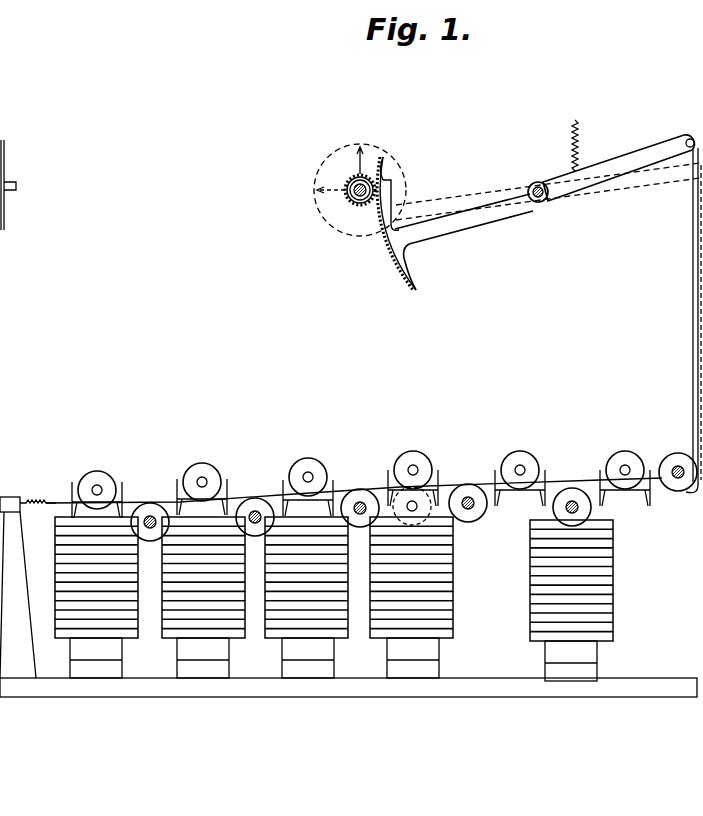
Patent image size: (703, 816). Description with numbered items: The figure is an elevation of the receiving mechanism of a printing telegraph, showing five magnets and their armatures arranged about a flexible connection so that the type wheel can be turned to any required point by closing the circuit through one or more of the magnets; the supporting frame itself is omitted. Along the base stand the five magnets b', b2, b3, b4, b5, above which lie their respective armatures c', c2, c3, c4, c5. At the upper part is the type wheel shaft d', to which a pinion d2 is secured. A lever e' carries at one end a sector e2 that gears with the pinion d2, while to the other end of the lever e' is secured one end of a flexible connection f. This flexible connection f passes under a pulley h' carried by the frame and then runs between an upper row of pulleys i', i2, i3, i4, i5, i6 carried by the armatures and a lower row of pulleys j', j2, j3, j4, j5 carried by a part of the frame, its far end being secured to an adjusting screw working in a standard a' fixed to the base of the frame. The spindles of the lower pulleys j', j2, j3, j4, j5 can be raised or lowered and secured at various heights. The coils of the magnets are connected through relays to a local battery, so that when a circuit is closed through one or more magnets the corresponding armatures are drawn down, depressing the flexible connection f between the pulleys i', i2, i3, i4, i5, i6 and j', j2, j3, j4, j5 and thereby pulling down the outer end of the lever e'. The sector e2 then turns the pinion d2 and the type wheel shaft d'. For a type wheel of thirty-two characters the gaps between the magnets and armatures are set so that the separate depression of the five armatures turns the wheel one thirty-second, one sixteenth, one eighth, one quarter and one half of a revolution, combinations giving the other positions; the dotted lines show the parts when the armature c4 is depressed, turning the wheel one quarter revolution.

The standard a' is at (28, 587).
The magnet b' is at (92, 597).
The magnet b2 is at (197, 597).
The magnet b3 is at (304, 597).
The magnet b4 is at (409, 597).
The magnet b5 is at (558, 600).
The armature c' is at (112, 487).
The armature c2 is at (226, 487).
The armature c3 is at (308, 498).
The armature c4 is at (413, 497).
The armature c5 is at (550, 503).
The type wheel shaft d' is at (355, 194).
The pinion d2 is at (341, 171).
The lever e' is at (548, 170).
The sector e2 is at (412, 265).
The flexible connection f is at (687, 357).
The pulley h' is at (678, 459).
The pulley i' is at (97, 477).
The pulley i2 is at (202, 468).
The pulley i3 is at (308, 464).
The pulley i4 is at (413, 457).
The pulley i5 is at (520, 457).
The pulley i6 is at (625, 457).
The pulley j' is at (150, 538).
The pulley j2 is at (258, 543).
The pulley j3 is at (363, 534).
The pulley j4 is at (490, 514).
The pulley j5 is at (572, 506).